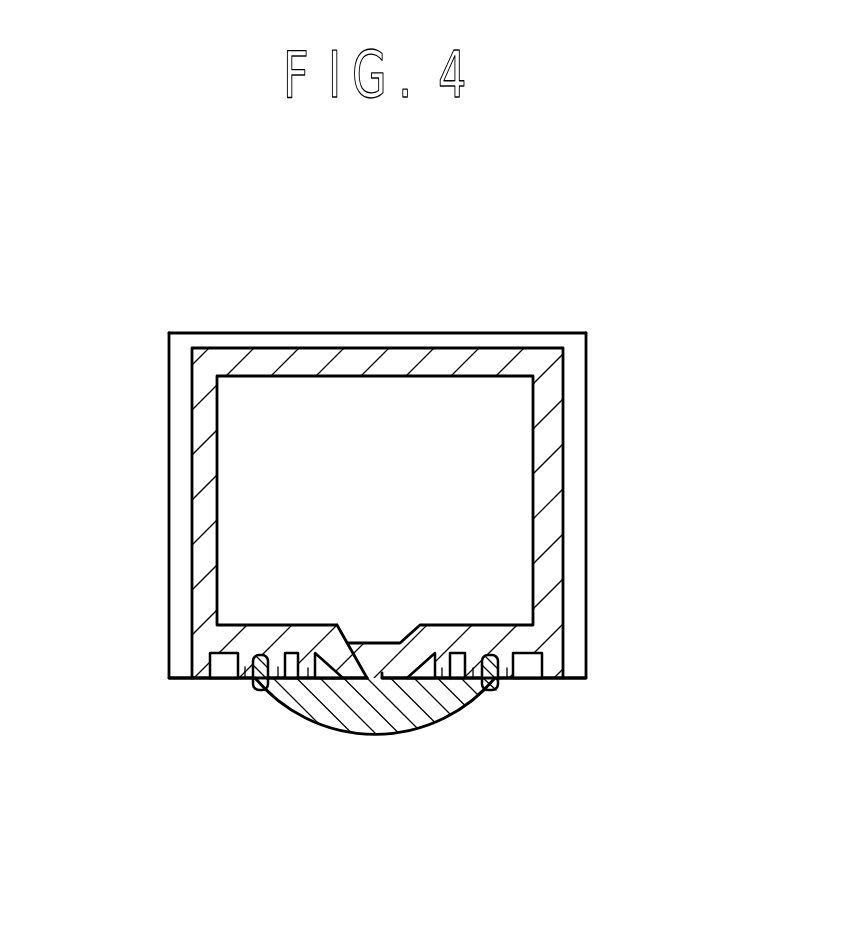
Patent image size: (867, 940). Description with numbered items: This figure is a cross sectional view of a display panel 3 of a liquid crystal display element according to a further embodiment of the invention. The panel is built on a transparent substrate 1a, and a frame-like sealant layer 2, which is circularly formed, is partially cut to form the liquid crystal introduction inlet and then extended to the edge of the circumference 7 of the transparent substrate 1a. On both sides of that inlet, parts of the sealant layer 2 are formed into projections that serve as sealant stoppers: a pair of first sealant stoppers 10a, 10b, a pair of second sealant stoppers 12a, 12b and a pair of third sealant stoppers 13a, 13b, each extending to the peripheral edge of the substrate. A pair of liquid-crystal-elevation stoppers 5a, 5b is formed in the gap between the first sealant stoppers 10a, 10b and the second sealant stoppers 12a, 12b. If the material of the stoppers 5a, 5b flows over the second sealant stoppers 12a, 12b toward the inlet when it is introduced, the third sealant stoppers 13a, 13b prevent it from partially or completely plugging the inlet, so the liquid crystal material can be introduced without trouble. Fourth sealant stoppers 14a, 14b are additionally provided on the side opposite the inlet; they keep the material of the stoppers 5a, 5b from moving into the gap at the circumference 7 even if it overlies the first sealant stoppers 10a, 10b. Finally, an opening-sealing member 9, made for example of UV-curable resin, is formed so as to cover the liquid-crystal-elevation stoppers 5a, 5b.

The display panel 3 is at (433, 536).
The transparent substrate 1a is at (398, 280).
The frame-like sealant layer 2 is at (433, 513).
The circumference 7 is at (425, 505).
The liquid crystal introduction inlet sealing portion 9 is at (401, 789).
The fourth sealant stopper 14a is at (615, 645).
The fourth sealant stopper 14b is at (145, 644).
The first sealant stopper 10a is at (600, 698).
The first sealant stopper 10b is at (158, 696).
The second sealant stopper 12a is at (546, 756).
The second sealant stopper 12b is at (213, 755).
The third sealant stopper 13a is at (474, 757).
The third sealant stopper 13b is at (285, 755).
The liquid-crystal-elevation stopper 5a is at (590, 749).
The liquid-crystal-elevation stopper 5b is at (169, 747).